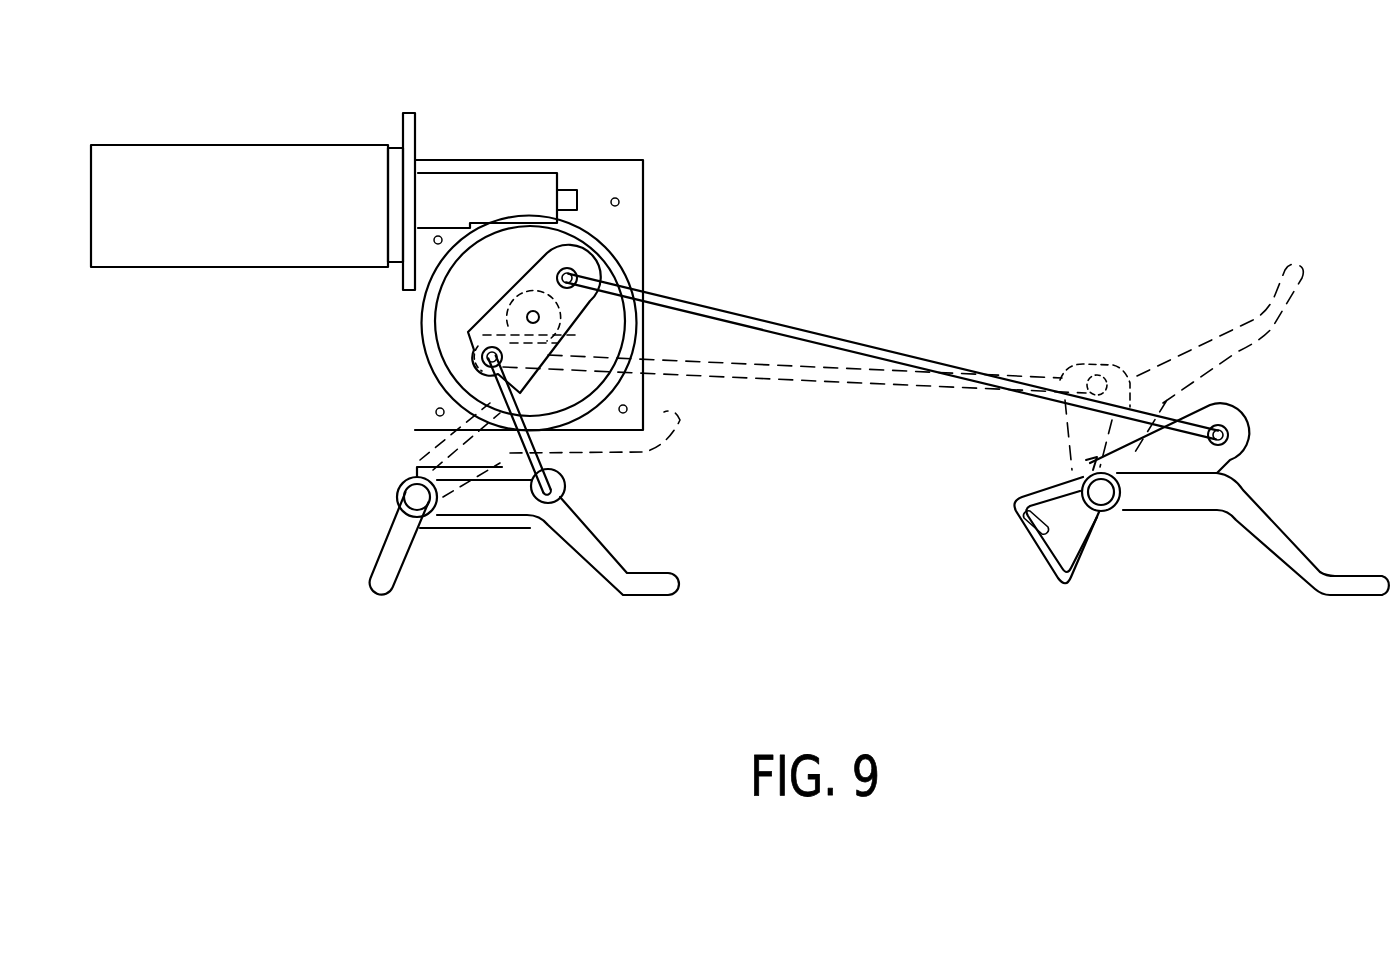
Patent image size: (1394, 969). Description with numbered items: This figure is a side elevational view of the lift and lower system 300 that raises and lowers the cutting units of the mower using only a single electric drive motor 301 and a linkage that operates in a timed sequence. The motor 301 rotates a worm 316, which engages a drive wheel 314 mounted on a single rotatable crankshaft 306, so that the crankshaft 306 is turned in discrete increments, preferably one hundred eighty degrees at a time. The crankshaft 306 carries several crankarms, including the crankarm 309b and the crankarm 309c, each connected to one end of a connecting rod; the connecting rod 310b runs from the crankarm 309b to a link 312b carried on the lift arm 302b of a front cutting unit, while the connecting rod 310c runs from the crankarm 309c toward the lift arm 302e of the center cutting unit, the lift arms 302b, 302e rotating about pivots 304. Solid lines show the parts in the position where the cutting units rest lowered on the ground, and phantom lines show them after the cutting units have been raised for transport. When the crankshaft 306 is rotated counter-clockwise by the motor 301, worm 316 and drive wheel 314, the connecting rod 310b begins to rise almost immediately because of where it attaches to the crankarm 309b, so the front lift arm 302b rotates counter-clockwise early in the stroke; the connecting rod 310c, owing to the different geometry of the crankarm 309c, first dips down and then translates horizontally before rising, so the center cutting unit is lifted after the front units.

The lift and lower system 300 is at (856, 100).
The electric drive motor 301 is at (262, 160).
The worm 316 is at (490, 190).
The crankarm 309b is at (556, 262).
The drive wheel 314 is at (604, 266).
The connecting rod 310b is at (778, 322).
The crankshaft 306 is at (525, 312).
The crankarm 309c is at (488, 347).
The connecting rod 310c is at (537, 447).
The lever 302e is at (598, 550).
The pivot 304 is at (417, 500).
The link 312b is at (1208, 408).
The lever 302b is at (1247, 493).